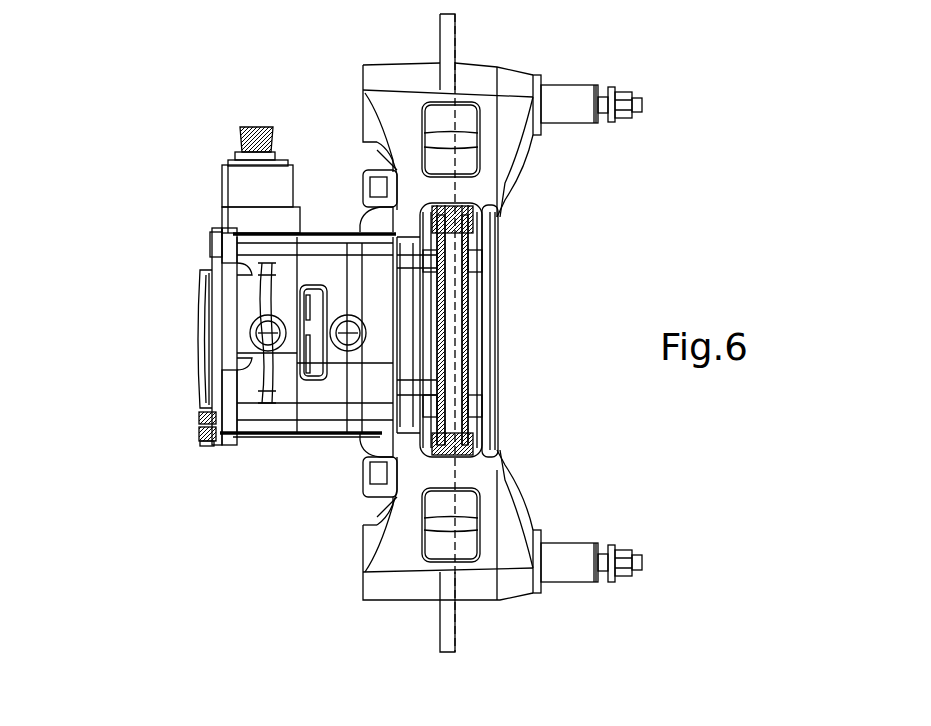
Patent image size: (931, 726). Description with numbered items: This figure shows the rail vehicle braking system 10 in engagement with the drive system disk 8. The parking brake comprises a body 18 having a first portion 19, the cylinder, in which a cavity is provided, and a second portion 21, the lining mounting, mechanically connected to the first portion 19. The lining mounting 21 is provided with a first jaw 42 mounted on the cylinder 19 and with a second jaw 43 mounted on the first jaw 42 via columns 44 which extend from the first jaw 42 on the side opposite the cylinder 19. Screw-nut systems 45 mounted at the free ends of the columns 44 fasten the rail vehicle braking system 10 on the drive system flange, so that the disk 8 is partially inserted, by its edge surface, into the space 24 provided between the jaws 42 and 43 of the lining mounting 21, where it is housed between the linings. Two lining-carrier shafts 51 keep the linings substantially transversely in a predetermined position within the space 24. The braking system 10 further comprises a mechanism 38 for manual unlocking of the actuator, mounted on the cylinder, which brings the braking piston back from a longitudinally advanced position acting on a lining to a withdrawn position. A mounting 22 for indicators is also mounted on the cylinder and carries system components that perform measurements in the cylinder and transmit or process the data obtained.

The rail vehicle braking system 10 is at (134, 146).
The body 18 is at (205, 550).
The first portion 19 is at (303, 436).
The second portion 21 is at (400, 600).
The mounting for indicators 22 is at (222, 190).
The space 24 is at (487, 296).
The mechanism for manual unlocking 38 is at (207, 387).
The first jaw 42 is at (413, 333).
The second jaw 43 is at (488, 388).
The columns 44 is at (573, 84).
The screw-nut systems 45 is at (633, 86).
The lining-carrier shafts 51 is at (430, 258).
The drive system disk 8 is at (450, 332).